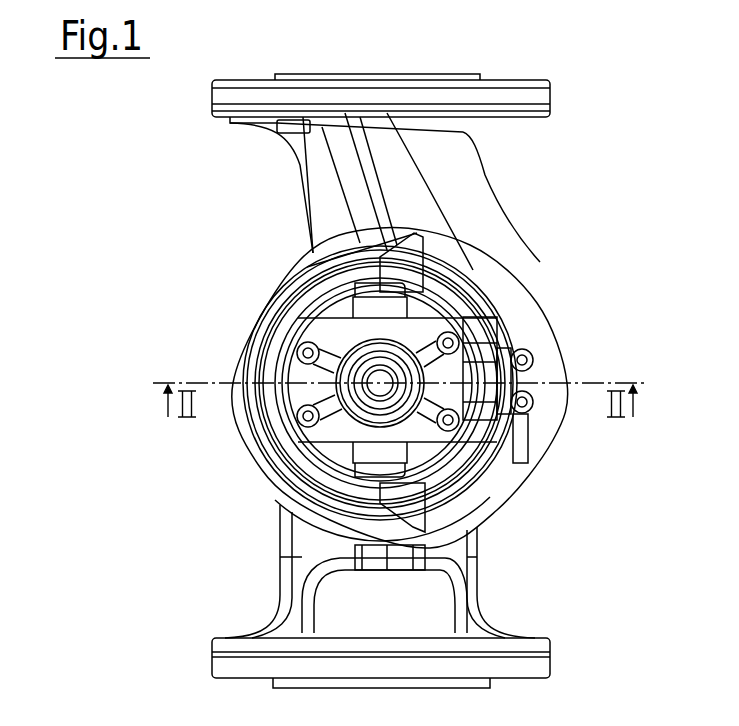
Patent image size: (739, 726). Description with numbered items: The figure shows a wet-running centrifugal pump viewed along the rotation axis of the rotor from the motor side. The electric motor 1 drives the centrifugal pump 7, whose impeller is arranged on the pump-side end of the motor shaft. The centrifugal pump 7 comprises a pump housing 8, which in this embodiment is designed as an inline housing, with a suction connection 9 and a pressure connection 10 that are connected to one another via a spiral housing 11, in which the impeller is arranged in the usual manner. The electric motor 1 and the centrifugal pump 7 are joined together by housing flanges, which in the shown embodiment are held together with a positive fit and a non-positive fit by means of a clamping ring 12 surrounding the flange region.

The electric motor 1 is at (264, 305).
The centrifugal pump 7 is at (527, 222).
The pump housing 8 is at (541, 282).
The suction connection 9 is at (543, 668).
The pressure connection 10 is at (543, 99).
The spiral housing 11 is at (541, 448).
The clamping ring 12 is at (516, 337).